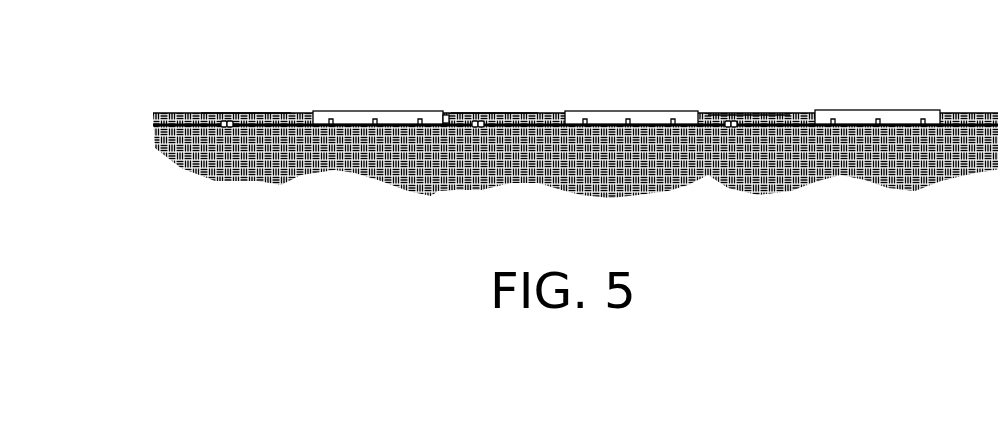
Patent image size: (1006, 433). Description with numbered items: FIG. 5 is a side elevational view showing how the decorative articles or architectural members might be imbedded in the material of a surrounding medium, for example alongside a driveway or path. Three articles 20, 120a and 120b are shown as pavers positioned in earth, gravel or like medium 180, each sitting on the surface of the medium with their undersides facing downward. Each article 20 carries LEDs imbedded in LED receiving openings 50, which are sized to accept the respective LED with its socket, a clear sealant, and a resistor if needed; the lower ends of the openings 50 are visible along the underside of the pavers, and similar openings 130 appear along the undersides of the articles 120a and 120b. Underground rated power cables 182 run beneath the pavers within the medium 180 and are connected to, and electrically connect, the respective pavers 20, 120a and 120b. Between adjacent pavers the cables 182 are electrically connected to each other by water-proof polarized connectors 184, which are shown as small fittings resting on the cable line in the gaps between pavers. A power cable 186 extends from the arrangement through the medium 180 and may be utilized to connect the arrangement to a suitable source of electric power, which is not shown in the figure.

The article 20 is at (877, 89).
The LED receiving opening 50 is at (878, 101).
The article 120a is at (626, 95).
The article 120b is at (381, 95).
The panel feet 130 is at (502, 102).
The medium 180 is at (573, 160).
The underground rated power cables 182 is at (495, 91).
The water-proof polarized connectors 184 is at (494, 108).
The power cable 186 is at (575, 169).